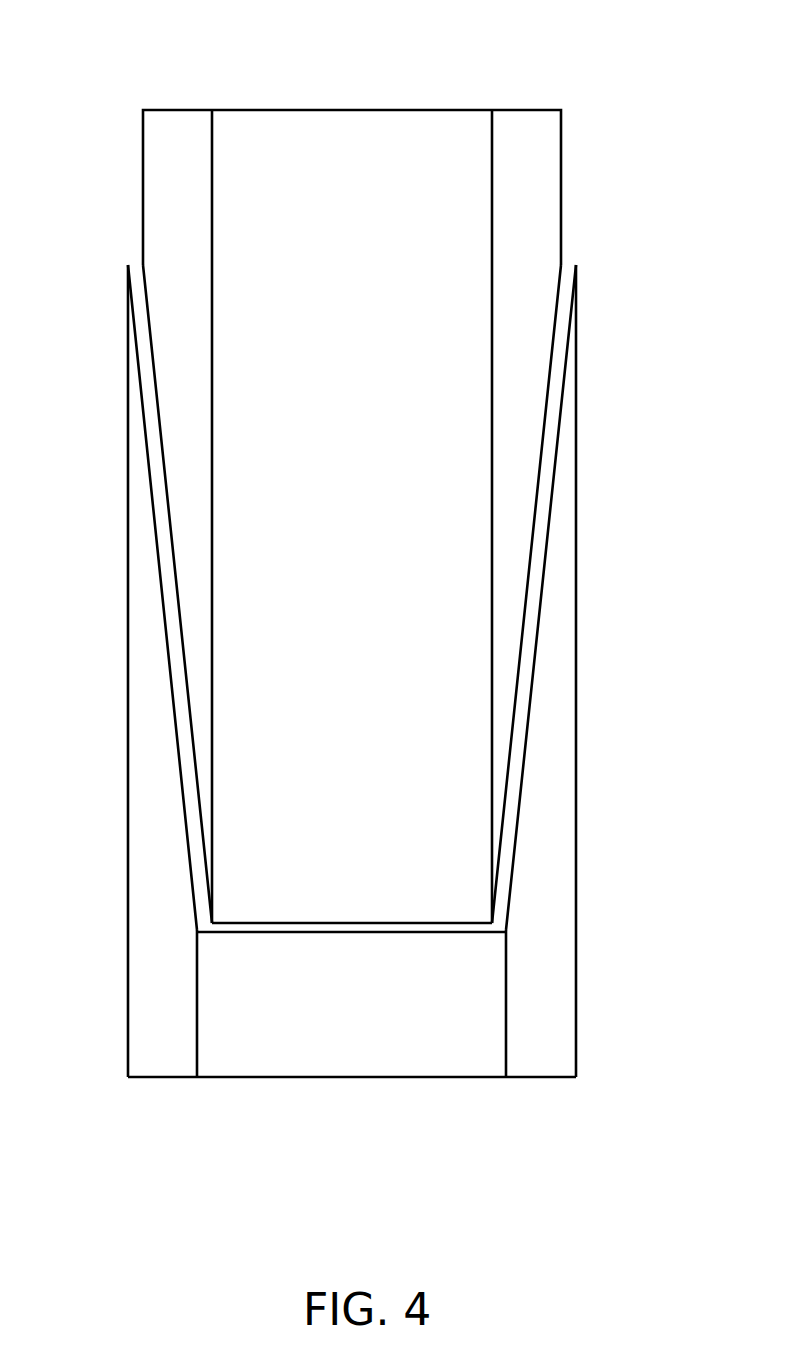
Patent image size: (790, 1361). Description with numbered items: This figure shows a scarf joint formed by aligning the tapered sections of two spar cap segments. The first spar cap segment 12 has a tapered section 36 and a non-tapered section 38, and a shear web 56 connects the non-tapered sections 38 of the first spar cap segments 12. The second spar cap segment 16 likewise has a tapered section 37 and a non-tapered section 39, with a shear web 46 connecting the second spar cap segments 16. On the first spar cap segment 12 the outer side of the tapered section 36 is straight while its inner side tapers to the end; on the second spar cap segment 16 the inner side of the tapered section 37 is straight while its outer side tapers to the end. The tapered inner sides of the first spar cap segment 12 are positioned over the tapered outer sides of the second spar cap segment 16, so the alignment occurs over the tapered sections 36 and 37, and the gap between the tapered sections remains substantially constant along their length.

The first spar cap segment 12 is at (128, 1032).
The second spar cap segment 16 is at (143, 160).
The tapered section of first spar cap segment 36 is at (142, 732).
The tapered section of second spar cap segment 37 is at (200, 575).
The non-tapered section of first spar cap segment 38 is at (183, 1002).
The non-tapered section of second spar cap segment 39 is at (194, 173).
The shear web 46 is at (342, 140).
The shear web 56 is at (360, 1065).